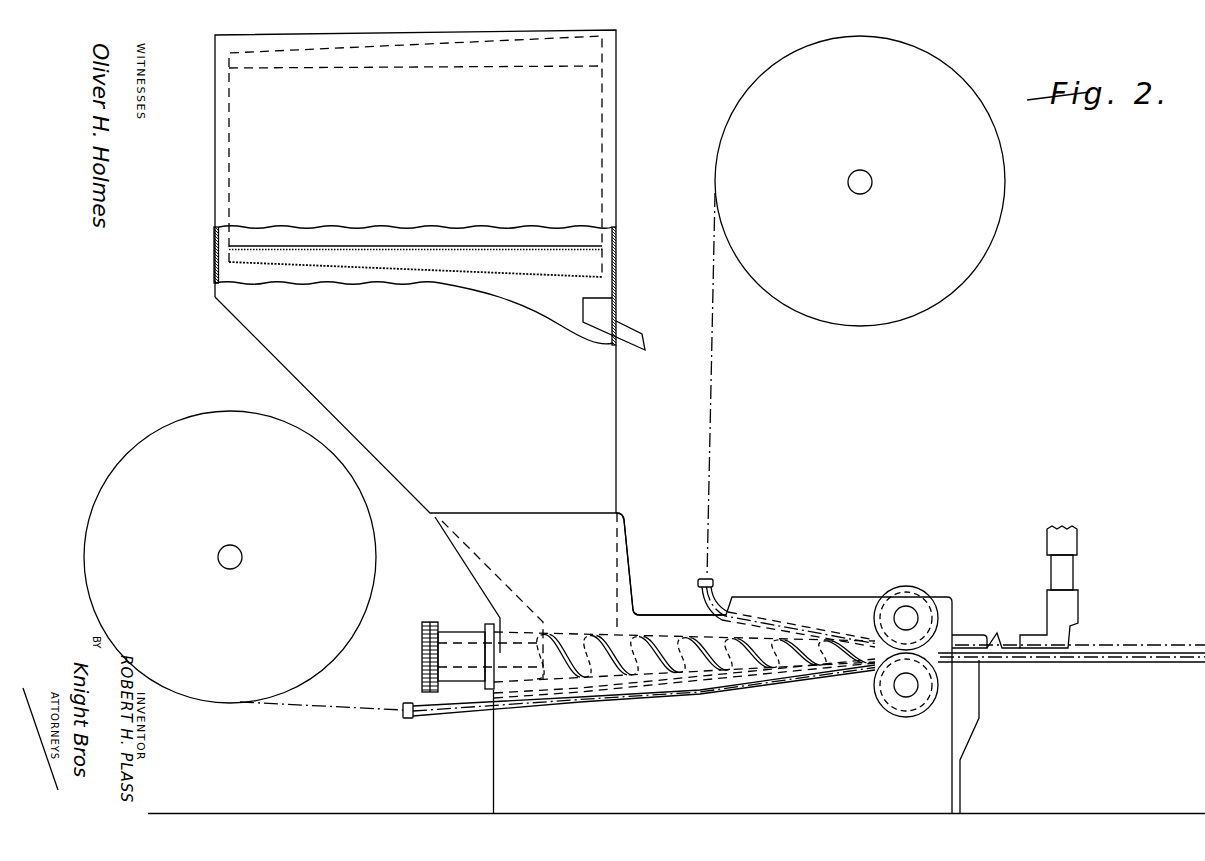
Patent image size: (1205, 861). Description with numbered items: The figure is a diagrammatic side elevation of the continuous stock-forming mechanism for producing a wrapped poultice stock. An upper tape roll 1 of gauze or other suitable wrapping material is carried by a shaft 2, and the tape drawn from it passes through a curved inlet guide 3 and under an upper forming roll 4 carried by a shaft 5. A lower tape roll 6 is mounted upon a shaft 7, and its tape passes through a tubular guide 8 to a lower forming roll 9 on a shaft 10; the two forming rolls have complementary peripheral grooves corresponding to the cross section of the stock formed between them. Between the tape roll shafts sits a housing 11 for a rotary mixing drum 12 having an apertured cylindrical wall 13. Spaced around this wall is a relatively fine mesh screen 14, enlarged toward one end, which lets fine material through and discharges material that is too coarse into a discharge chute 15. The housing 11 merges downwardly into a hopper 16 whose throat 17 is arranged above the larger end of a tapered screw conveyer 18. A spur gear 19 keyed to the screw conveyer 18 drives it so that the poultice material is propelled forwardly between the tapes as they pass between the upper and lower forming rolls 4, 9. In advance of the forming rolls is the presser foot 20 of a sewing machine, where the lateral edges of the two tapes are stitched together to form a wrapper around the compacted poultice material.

The upper tape roll 1 is at (983, 237).
The shaft 2 is at (848, 178).
The curved inlet guide 3 is at (717, 594).
The upper forming roll 4 is at (900, 587).
The shaft 5 is at (915, 614).
The lower tape roll 6 is at (126, 463).
The shaft 7 is at (238, 550).
The tubular guide 8 is at (433, 718).
The lower forming roll 9 is at (957, 693).
The shaft 10 is at (900, 691).
The housing 11 is at (215, 278).
The rotary mixing drum 12 is at (229, 237).
The apertured cylindrical wall 13 is at (322, 246).
The fine mesh screen 14 is at (452, 272).
The discharge chute 15 is at (628, 333).
The hopper 16 is at (583, 555).
The throat 17 is at (588, 618).
The tapered screw conveyer 18 is at (650, 674).
The spur gear 19 is at (432, 624).
The presser foot 20 is at (1063, 615).